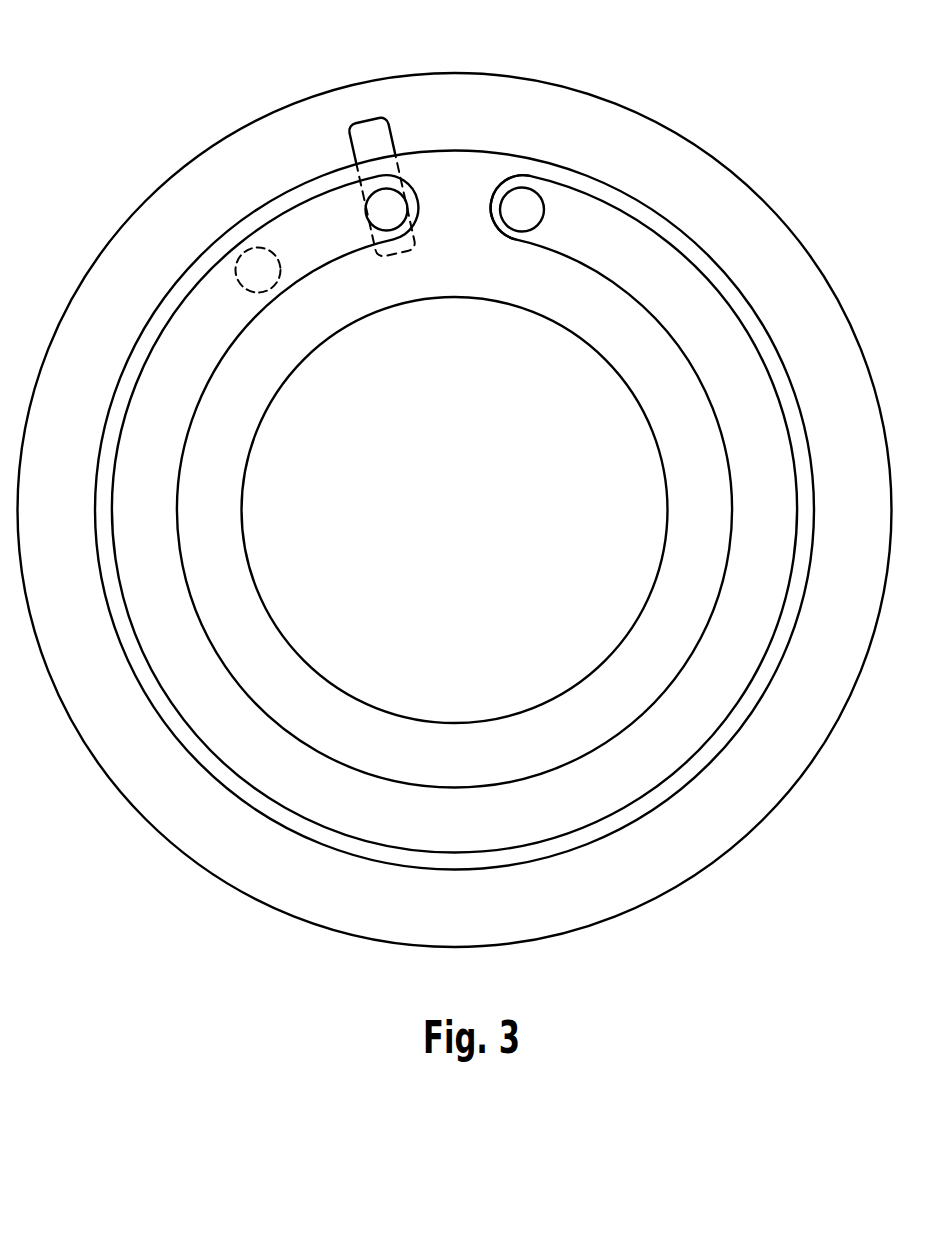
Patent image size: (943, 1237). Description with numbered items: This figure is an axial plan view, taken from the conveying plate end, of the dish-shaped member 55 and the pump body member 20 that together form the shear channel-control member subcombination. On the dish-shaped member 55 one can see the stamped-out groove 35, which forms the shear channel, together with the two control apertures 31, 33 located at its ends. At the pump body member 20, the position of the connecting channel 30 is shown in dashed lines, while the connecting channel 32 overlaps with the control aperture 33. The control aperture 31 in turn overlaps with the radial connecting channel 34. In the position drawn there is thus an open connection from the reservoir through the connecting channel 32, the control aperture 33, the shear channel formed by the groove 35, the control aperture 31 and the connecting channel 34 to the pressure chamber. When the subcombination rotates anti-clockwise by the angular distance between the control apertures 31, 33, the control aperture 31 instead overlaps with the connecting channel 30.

The pump body member 20 is at (437, 113).
The connecting channel 30 is at (235, 267).
The control aperture 31 is at (370, 212).
The connecting channel 32 is at (543, 200).
The control aperture 33 is at (525, 200).
The radial connecting channel 34 is at (368, 128).
The stamped-out groove 35 is at (653, 263).
The dish-shaped member 55 is at (470, 188).